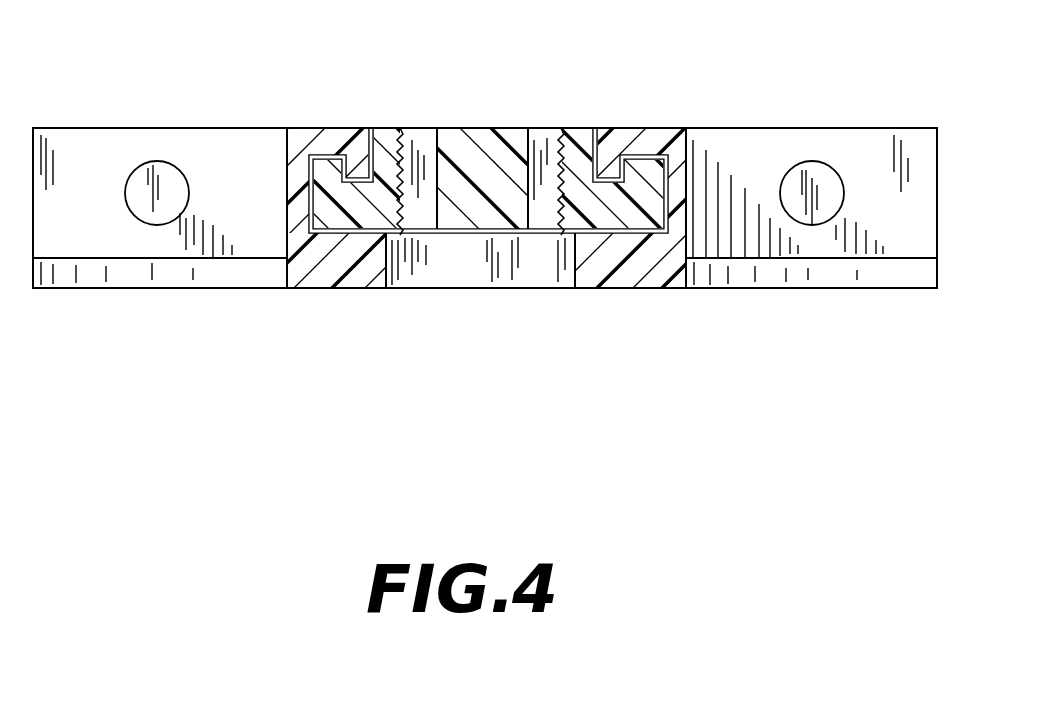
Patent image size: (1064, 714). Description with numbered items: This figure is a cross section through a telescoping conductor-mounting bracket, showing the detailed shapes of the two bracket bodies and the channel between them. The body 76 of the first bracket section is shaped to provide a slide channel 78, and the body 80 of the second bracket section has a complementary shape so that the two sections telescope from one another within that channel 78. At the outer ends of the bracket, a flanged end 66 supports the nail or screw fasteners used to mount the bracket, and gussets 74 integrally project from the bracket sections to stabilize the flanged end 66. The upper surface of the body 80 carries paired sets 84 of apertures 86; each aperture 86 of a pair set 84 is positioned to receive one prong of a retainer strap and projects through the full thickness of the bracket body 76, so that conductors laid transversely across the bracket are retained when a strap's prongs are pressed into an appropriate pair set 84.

The flanged end 66 is at (937, 196).
The gussets 74 is at (208, 288).
The body 76 is at (331, 128).
The slide channel 78 is at (648, 128).
The body 80 is at (388, 128).
The paired sets 84 is at (553, 118).
The apertures 86 is at (428, 128).